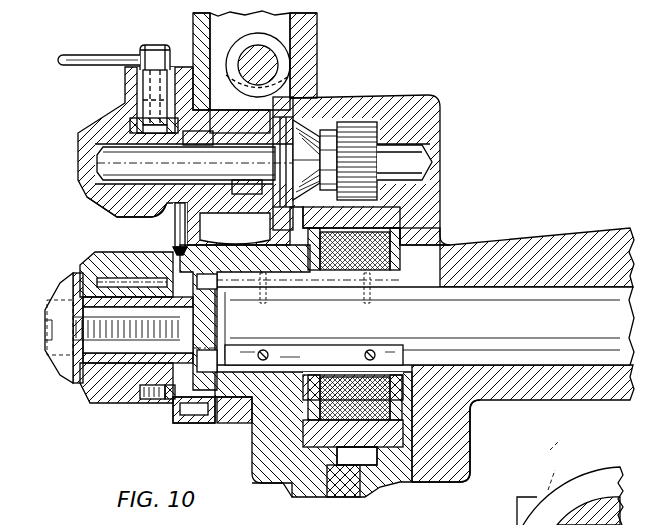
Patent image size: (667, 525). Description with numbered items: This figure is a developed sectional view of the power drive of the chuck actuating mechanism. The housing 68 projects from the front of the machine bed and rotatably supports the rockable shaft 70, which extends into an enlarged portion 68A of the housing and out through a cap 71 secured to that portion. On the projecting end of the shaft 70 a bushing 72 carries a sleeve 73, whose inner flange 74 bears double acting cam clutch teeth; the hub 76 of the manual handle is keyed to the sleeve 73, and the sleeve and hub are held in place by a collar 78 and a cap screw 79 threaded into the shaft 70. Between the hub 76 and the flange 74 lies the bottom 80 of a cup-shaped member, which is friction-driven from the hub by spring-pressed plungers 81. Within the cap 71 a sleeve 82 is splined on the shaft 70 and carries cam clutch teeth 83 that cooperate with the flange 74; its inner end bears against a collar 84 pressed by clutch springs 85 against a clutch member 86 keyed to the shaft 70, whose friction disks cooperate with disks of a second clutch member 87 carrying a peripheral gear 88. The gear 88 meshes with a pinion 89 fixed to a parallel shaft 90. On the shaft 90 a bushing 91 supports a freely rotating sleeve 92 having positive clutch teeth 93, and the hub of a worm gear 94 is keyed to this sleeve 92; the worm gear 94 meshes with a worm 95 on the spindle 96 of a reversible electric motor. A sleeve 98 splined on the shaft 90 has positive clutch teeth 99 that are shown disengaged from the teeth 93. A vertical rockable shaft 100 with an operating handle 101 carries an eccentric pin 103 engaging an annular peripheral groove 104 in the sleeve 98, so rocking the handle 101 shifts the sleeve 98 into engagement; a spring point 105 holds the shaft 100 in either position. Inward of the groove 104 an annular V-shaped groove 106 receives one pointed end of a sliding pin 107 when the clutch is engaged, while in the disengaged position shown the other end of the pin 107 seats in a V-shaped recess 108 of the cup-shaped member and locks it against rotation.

The housing 68 is at (530, 245).
The enlarged portion of the housing 68A is at (430, 215).
The rockable shaft 70 is at (590, 326).
The cap 71 is at (283, 487).
The bushing 72 is at (178, 354).
The sleeve 73 is at (93, 402).
The flange 74 is at (186, 410).
The hub 76 is at (78, 392).
The collar 78 is at (73, 272).
The cap screw 79 is at (45, 340).
The bottom of cup-shaped member 80 is at (148, 400).
The spring-pressed plungers 81 is at (168, 400).
The sleeve 82 is at (247, 405).
The double acting cam clutch teeth 83 is at (215, 420).
The collar 84 is at (252, 395).
The clutch springs 85 is at (337, 348).
The clutch member 86 is at (412, 440).
The second clutch member 87 is at (352, 470).
The gear 88 is at (367, 470).
The pinion 89 is at (355, 125).
The shaft 90 is at (440, 118).
The bushing 91 is at (236, 148).
The sleeve 92 is at (245, 180).
The positive clutch teeth 93 is at (255, 112).
The worm gear 94 is at (290, 100).
The worm 95 is at (273, 50).
The spindle 96 is at (275, 66).
The sleeve 98 is at (165, 180).
The positive clutch teeth 99 is at (198, 146).
The rockable shaft 100 is at (150, 95).
The operating handle 101 is at (88, 55).
The eccentric pin 103 is at (135, 120).
The annular peripheral groove 104 is at (130, 214).
The spring point 105 is at (190, 50).
The annular V-shaped groove 106 is at (160, 214).
The sliding pin 107 is at (178, 225).
The V-shaped recess 108 is at (173, 248).